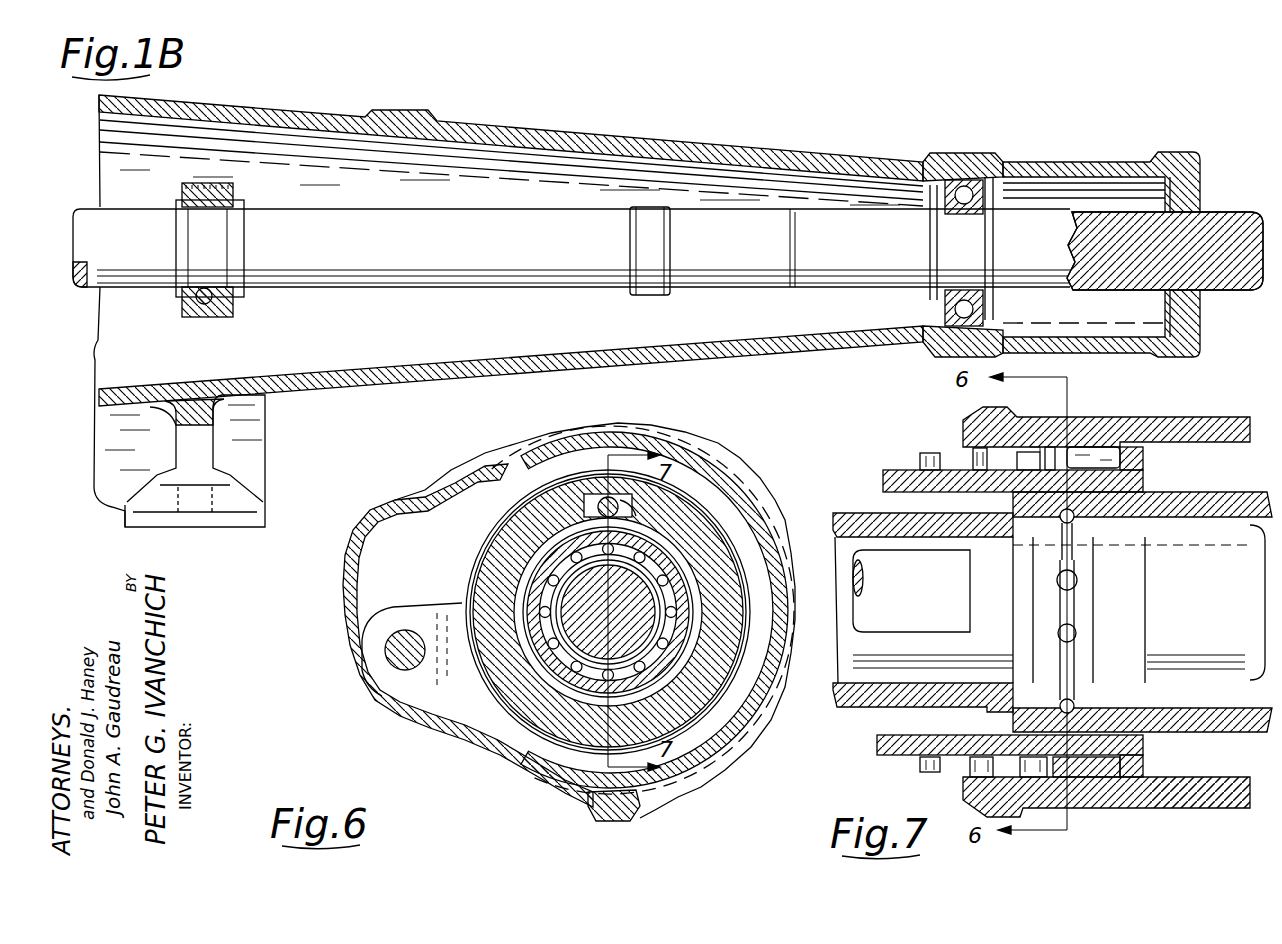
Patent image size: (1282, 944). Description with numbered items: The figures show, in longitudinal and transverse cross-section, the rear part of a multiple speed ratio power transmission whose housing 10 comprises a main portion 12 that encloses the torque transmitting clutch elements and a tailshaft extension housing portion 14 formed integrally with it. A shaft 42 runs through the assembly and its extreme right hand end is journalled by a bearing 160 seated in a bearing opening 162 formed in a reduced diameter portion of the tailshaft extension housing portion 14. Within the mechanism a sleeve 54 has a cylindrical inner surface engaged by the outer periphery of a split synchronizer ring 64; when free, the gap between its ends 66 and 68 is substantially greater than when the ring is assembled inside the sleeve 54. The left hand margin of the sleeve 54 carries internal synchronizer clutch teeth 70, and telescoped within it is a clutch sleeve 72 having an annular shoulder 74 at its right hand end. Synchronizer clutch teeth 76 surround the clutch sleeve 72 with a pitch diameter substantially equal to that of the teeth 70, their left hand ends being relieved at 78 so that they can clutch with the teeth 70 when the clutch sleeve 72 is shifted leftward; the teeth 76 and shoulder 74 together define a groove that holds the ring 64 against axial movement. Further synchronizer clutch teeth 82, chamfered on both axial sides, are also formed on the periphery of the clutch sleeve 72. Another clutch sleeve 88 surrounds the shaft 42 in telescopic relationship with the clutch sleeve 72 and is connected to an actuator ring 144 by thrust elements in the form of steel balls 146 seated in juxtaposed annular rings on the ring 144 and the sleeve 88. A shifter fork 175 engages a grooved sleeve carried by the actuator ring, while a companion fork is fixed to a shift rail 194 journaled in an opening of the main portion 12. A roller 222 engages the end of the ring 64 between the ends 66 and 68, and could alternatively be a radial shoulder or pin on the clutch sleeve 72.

In FIG. 1B, the housing 10 is at (299, 102).
In FIG. 6, the housing 10 is at (343, 551).
In FIG. 6, the main portion 12 is at (392, 498).
In FIG. 1B, the tailshaft extension housing portion 14 is at (483, 120).
In FIG. 6, the tailshaft extension housing portion 14 is at (518, 452).
In FIG. 1B, the shaft 42 is at (352, 190).
In FIG. 6, the shaft 42 is at (573, 680).
In FIG. 7, the shaft 42 is at (1197, 657).
In FIG. 6, the sleeve 54 is at (488, 588).
In FIG. 7, the sleeve 54 is at (1213, 418).
In FIG. 6, the split synchronizer ring 64 is at (518, 557).
In FIG. 7, the split synchronizer ring 64 is at (1097, 777).
In FIG. 6, the end of synchronizer ring 66 is at (590, 508).
In FIG. 6, the end of synchronizer ring 68 is at (635, 512).
In FIG. 7, the internal synchronizer clutch teeth 70 is at (977, 457).
In FIG. 6, the clutch sleeve 72 is at (540, 665).
In FIG. 7, the clutch sleeve 72 is at (897, 470).
In FIG. 7, the annular shoulder 74 is at (1133, 777).
In FIG. 7, the synchronizer clutch teeth 76 is at (1052, 452).
In FIG. 7, the relieved ends of teeth 78 is at (1022, 455).
In FIG. 7, the synchronizer clutch teeth 82 is at (923, 767).
In FIG. 6, the clutch sleeve 88 is at (543, 680).
In FIG. 6, the actuator ring 144 is at (607, 700).
In FIG. 7, the actuator ring 144 is at (1222, 478).
In FIG. 6, the steel balls 146 is at (607, 672).
In FIG. 7, the steel balls 146 is at (1083, 590).
In FIG. 1B, the bearing 160 is at (985, 180).
In FIG. 1B, the bearing opening 162 is at (958, 178).
In FIG. 7, the bearing opening 162 is at (1217, 777).
In FIG. 6, the shifter fork 175 is at (378, 630).
In FIG. 6, the shift rail 194 is at (395, 648).
In FIG. 6, the roller 222 is at (610, 498).
In FIG. 7, the roller 222 is at (1095, 450).